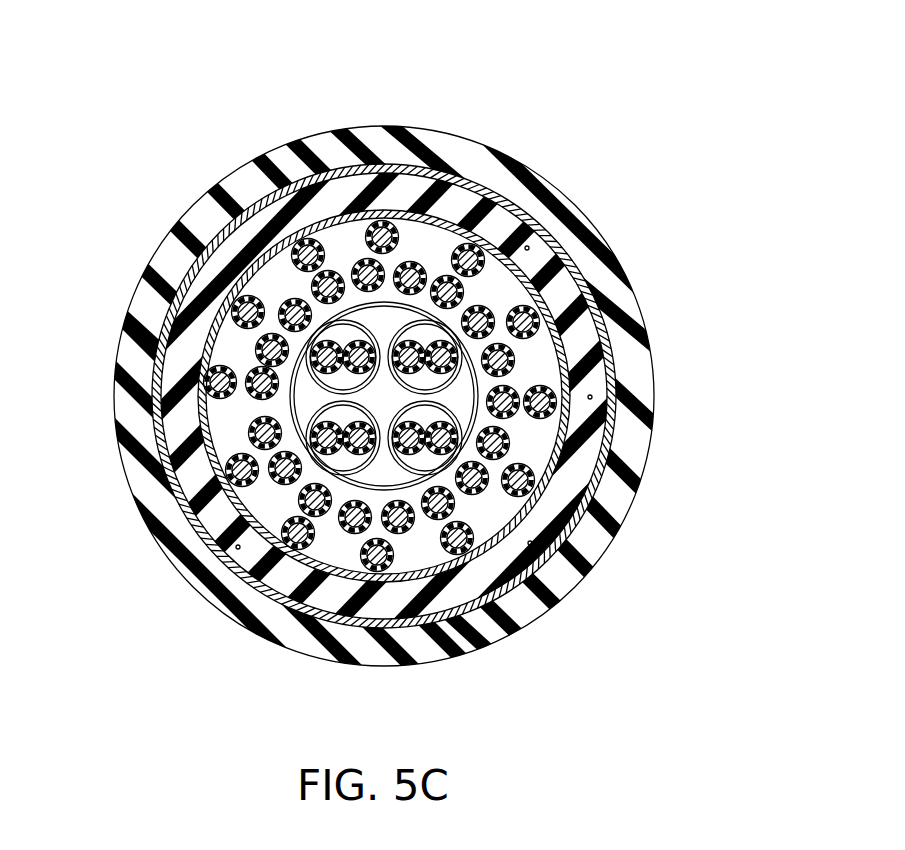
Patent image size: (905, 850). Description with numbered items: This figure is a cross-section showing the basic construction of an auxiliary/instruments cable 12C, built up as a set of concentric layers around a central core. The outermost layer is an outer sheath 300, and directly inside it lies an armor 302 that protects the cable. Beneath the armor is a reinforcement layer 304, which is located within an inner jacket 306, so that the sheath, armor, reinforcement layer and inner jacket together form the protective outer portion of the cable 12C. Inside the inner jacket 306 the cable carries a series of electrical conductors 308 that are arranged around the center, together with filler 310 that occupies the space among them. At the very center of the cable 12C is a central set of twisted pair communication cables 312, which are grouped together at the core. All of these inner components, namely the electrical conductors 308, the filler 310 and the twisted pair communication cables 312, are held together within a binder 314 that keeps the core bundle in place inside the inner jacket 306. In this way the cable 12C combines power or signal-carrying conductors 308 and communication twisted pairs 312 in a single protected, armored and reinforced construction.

The auxiliary/instruments cable 12C is at (440, 93).
The outer sheath 300 is at (527, 170).
The armor 302 is at (157, 457).
The reinforcement layer 304 is at (240, 253).
The inner jacket 306 is at (577, 497).
The electrical conductors 308 is at (556, 408).
The filler 310 is at (263, 503).
The twisted pair communication cables 312 is at (268, 335).
The binder 314 is at (523, 267).